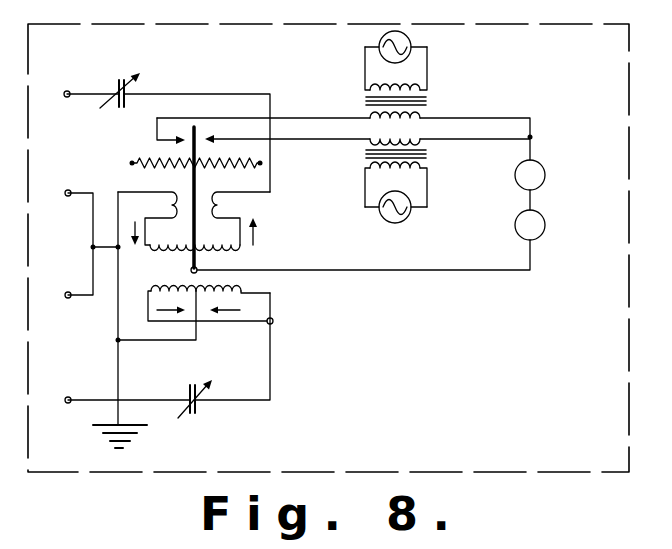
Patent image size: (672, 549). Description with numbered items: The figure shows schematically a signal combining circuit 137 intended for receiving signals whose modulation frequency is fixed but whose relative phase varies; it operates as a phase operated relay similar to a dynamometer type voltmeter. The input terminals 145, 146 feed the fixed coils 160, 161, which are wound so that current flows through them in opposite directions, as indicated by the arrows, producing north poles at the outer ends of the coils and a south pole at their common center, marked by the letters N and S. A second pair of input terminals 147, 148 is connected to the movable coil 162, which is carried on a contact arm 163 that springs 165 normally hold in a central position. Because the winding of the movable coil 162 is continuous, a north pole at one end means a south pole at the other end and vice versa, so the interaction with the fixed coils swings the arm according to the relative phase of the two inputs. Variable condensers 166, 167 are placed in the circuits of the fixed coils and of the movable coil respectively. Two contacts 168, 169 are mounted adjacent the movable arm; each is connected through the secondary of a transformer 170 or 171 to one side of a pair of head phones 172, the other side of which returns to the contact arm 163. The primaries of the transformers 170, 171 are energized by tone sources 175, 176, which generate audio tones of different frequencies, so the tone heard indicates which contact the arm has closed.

The signal combining circuit 137 is at (168, 472).
The input terminal 145 is at (64, 400).
The input terminal 146 is at (64, 295).
The input terminal 147 is at (64, 193).
The input terminal 148 is at (63, 94).
The fixed coil 160 is at (180, 284).
The fixed coil 161 is at (248, 289).
The movable coil 162 is at (187, 242).
The contact arm 163 is at (200, 183).
The springs 165 is at (148, 165).
The variable condenser 166 is at (198, 403).
The variable condenser 167 is at (127, 88).
The contact 168 is at (214, 138).
The contact 169 is at (167, 141).
The transformer 170 is at (427, 153).
The transformer 171 is at (427, 100).
The head phones 172 is at (545, 180).
The tone source 175 is at (410, 216).
The tone source 176 is at (411, 40).